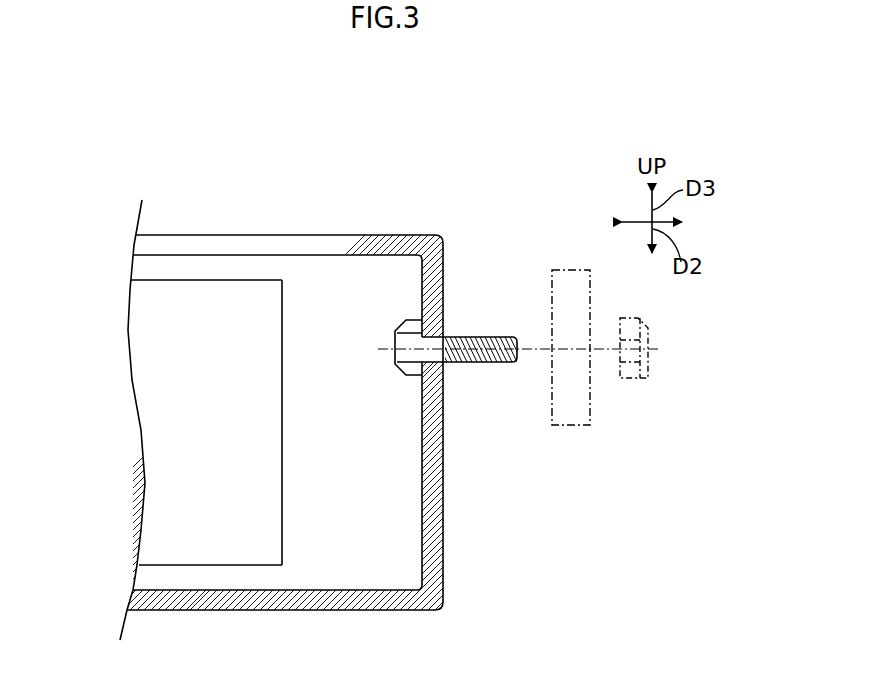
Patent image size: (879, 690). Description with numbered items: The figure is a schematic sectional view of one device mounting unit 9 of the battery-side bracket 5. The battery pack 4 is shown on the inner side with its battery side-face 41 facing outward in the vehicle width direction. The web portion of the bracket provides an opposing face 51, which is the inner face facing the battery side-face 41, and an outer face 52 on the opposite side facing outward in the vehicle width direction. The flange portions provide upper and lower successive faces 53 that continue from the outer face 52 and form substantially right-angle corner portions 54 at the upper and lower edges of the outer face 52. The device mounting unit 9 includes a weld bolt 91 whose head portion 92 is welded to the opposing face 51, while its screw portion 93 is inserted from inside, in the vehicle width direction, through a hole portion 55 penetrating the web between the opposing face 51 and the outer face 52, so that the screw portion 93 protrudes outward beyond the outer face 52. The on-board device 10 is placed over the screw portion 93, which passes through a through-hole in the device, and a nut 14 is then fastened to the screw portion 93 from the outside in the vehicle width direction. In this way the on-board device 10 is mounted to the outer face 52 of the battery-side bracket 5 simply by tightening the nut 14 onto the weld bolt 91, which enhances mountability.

The battery-side bracket 5 is at (272, 198).
The successive face 53 is at (339, 235).
The corner portion 54 is at (443, 238).
The outer face 52 is at (444, 474).
The opposing face 51 is at (421, 473).
The hole portion 55 is at (446, 356).
The battery pack 4 is at (216, 434).
The battery side-face 41 is at (284, 430).
The device mounting unit 9 is at (460, 302).
The weld bolt 91 is at (497, 368).
The head portion 92 is at (397, 342).
The screw portion 93 is at (493, 337).
The on-board device 10 is at (569, 438).
The nut 14 is at (646, 388).